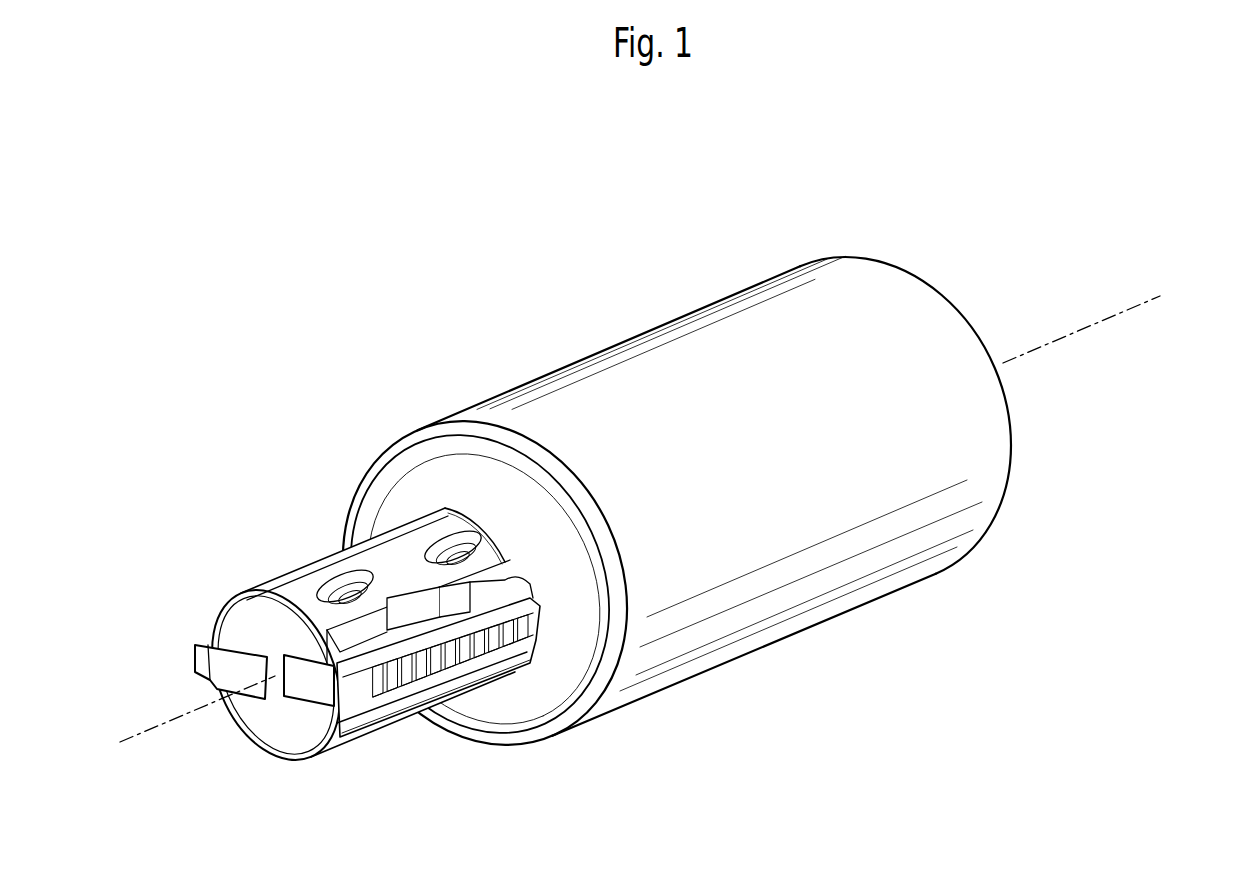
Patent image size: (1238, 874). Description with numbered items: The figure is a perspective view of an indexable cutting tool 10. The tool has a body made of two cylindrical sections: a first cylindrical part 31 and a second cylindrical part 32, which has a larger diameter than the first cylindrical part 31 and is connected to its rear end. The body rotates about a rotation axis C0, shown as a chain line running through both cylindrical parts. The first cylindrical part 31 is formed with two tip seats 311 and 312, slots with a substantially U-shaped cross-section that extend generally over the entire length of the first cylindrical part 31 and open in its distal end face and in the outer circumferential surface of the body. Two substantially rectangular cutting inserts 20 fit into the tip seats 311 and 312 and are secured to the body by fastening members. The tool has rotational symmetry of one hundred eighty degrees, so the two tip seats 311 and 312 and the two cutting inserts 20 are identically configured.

The cutting tool 10 is at (654, 490).
The second cylindrical part 32 is at (808, 288).
The first cylindrical part 31 is at (358, 560).
The tip seat 311 is at (300, 707).
The tip seat 312 is at (240, 645).
The cutting insert 20 is at (227, 668).
The rotation axis C0 is at (572, 340).